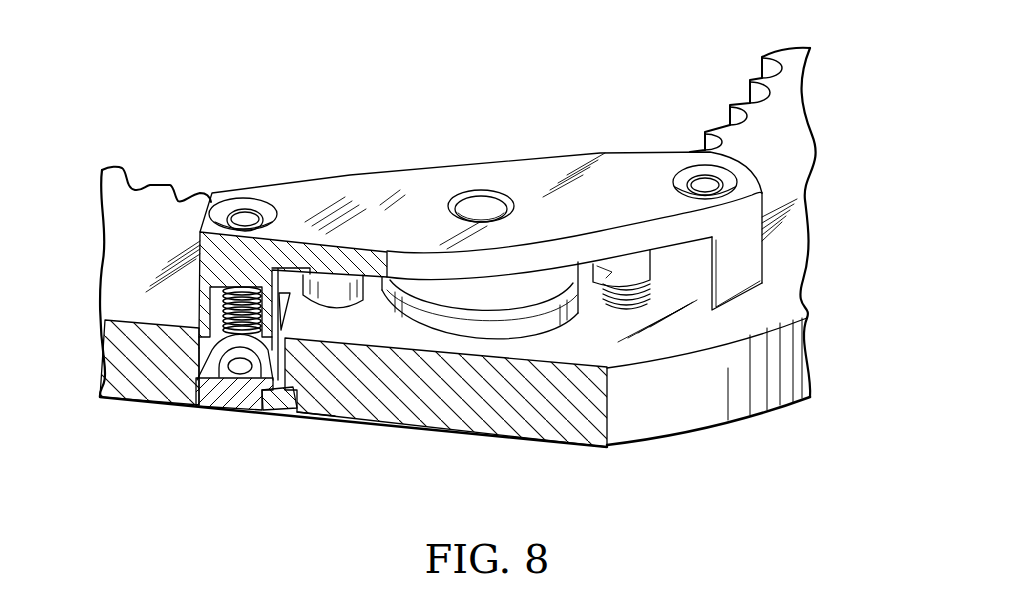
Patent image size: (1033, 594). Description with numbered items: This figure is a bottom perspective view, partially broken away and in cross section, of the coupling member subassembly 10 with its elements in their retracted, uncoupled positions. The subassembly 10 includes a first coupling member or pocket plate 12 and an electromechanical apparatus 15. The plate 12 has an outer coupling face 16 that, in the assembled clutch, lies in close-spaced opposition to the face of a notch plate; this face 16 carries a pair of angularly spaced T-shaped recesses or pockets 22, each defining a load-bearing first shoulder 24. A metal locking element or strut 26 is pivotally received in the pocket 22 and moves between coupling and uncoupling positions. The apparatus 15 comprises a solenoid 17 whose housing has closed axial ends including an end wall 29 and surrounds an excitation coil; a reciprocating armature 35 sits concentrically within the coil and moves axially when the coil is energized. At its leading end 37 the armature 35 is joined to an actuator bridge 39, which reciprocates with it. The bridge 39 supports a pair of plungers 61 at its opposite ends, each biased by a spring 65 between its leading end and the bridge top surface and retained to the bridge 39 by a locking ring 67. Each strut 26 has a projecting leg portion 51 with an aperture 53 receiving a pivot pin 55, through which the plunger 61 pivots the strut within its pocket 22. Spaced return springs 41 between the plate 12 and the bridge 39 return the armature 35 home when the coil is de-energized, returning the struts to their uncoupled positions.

The coupling member subassembly 10 is at (578, 47).
The first coupling member 12 is at (154, 416).
The electromechanical apparatus 15 is at (502, 141).
The coupling face 16 is at (433, 432).
The solenoid 17 is at (473, 159).
The recess 22 is at (200, 406).
The first shoulder 24 is at (335, 424).
The locking element 26 is at (244, 430).
The end wall 29 is at (487, 297).
The armature 35 is at (499, 191).
The leading end 37 is at (481, 206).
The actuator bridge 39 is at (392, 153).
The return spring 41 is at (657, 291).
The leg portion 51 is at (228, 362).
The aperture 53 is at (275, 408).
The pivot pin 55 is at (210, 350).
The plunger 61 is at (245, 215).
The spring 65 is at (210, 287).
The locking ring 67 is at (272, 207).